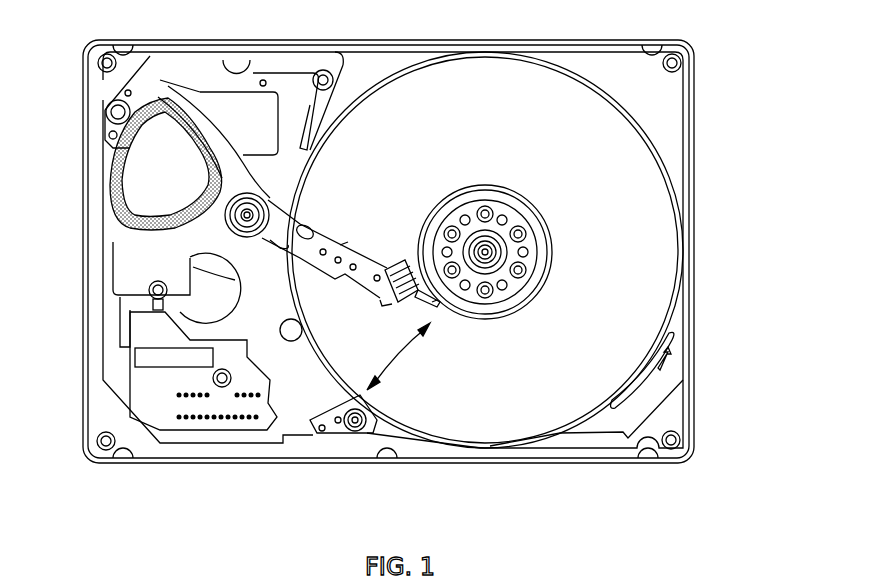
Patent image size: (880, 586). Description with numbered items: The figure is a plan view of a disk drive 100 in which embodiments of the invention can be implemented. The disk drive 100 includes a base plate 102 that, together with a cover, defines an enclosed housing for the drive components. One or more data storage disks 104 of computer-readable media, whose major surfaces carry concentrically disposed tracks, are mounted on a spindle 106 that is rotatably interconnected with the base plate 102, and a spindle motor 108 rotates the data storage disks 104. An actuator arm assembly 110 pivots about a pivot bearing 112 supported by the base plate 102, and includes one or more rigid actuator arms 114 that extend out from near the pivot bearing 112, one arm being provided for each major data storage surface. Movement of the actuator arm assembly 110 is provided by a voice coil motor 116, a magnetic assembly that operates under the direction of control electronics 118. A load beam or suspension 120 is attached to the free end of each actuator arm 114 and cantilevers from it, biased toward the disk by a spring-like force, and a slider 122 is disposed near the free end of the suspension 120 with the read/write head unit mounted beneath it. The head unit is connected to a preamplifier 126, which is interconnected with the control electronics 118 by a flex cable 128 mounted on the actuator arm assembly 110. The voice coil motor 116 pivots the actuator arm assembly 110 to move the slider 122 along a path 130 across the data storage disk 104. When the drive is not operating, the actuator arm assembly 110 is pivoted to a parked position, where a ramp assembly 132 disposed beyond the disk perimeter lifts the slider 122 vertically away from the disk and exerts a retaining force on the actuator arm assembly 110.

The disk drive 100 is at (708, 95).
The base plate 102 is at (563, 42).
The data storage disk 104 is at (473, 83).
The spindle 106 is at (465, 183).
The spindle motor 108 is at (497, 232).
The actuator arm assembly 110 is at (315, 222).
The pivot bearing 112 is at (227, 207).
The actuator arm 114 is at (348, 283).
The voice coil motor 116 is at (153, 182).
The control electronics 118 is at (213, 425).
The suspension 120 is at (410, 280).
The slider 122 is at (440, 305).
The preamplifier 126 is at (235, 267).
The flex cable 128 is at (205, 335).
The path 130 is at (412, 358).
The ramp assembly 132 is at (333, 435).